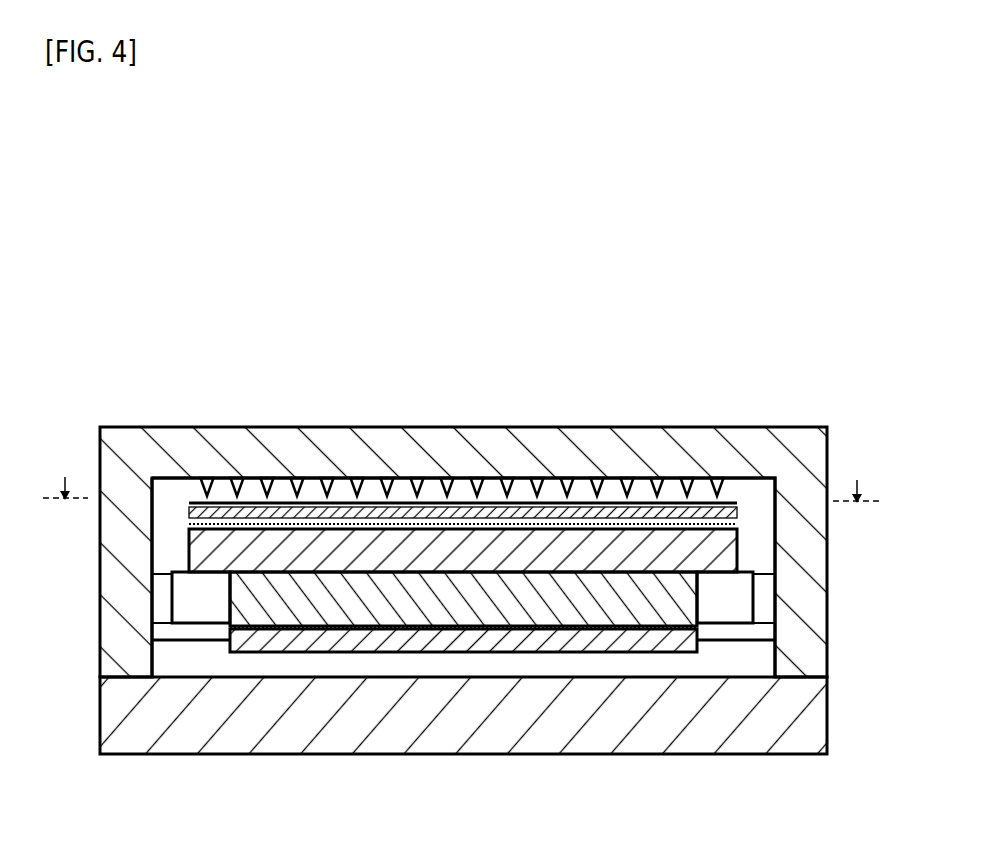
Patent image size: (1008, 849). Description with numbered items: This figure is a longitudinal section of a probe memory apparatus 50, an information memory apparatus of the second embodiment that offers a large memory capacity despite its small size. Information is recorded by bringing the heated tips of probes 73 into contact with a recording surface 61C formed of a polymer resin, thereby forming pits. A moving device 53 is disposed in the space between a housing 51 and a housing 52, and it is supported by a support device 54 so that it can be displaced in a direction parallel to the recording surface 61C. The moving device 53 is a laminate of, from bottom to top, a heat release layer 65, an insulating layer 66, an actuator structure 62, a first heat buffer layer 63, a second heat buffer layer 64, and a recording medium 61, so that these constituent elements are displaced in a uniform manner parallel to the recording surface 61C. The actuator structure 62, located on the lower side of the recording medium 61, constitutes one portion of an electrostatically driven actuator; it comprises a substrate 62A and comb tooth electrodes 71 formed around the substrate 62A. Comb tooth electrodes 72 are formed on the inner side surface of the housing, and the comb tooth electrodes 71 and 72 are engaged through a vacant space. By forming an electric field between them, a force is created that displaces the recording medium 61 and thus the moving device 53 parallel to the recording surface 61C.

The probe memory apparatus 50 is at (677, 390).
The housing 51 is at (296, 756).
The housing 52 is at (432, 434).
The moving device 53 is at (740, 493).
The support device 54 is at (182, 633).
The recording medium 61 is at (738, 506).
The recording surface 61C is at (490, 503).
The actuator structure 62 is at (494, 636).
The substrate 62A is at (623, 617).
The first heat buffer layer 63 is at (733, 552).
The second heat buffer layer 64 is at (532, 458).
The heat release layer 65 is at (403, 653).
The insulating layer 66 is at (346, 629).
The comb tooth electrodes 71 is at (190, 588).
The comb tooth electrodes 72 is at (163, 600).
The probes 73 is at (318, 488).